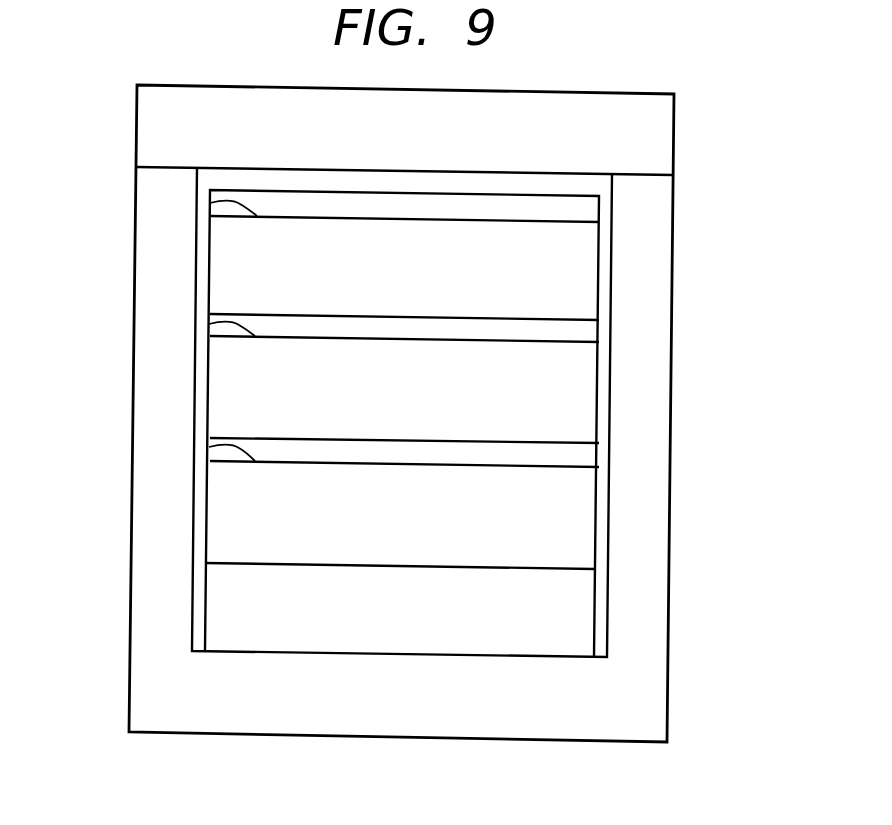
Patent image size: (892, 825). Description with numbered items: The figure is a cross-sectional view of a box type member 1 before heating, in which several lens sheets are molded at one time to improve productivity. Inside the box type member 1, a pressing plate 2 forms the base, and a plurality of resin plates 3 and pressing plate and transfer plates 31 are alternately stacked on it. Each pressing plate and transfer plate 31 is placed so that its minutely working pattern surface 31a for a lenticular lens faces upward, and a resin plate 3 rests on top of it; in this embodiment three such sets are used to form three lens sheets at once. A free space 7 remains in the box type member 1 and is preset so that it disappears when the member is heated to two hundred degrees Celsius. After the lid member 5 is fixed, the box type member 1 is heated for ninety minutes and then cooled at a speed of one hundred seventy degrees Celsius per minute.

The box type member 1 is at (652, 690).
The pressing plate 2 is at (583, 608).
The resin plate 3 is at (593, 212).
The lid member 5 is at (663, 126).
The free space 7 is at (595, 188).
The pressing plate and transfer plate 31 is at (588, 272).
The minutely working pattern surface 31a is at (210, 203).